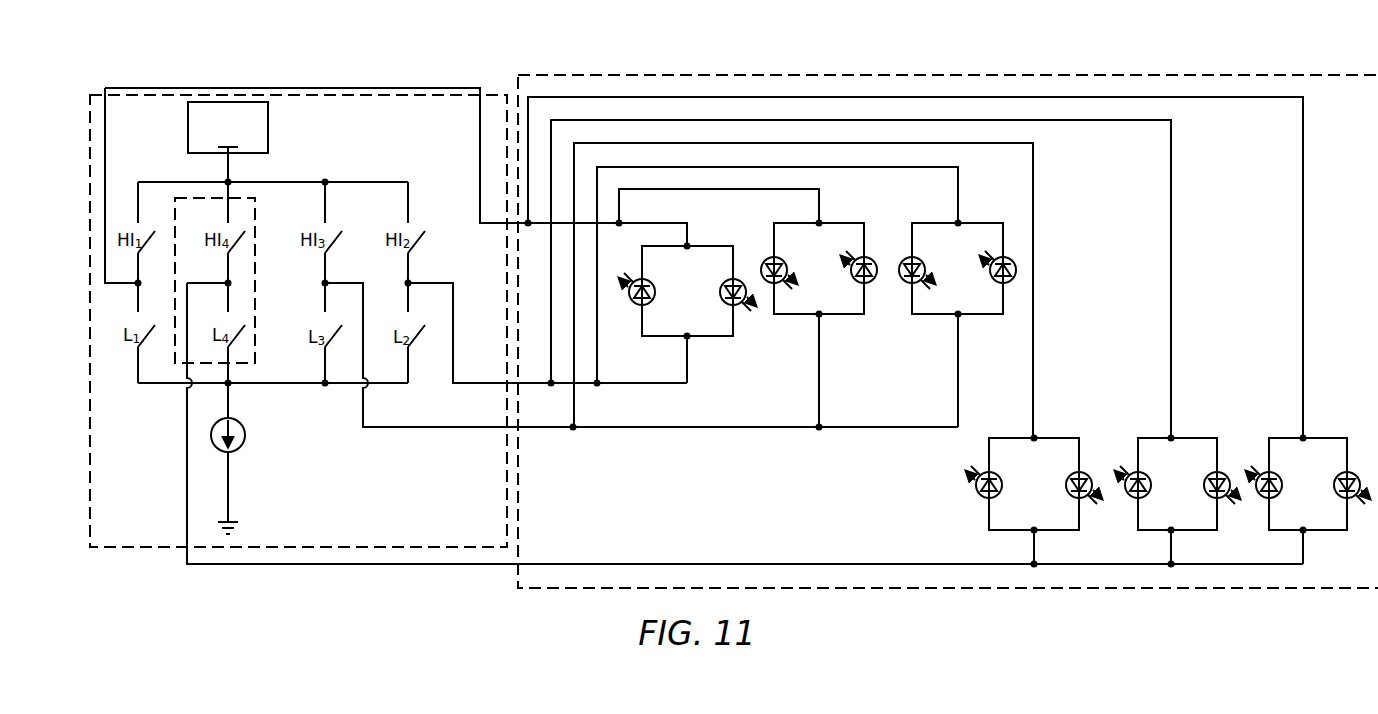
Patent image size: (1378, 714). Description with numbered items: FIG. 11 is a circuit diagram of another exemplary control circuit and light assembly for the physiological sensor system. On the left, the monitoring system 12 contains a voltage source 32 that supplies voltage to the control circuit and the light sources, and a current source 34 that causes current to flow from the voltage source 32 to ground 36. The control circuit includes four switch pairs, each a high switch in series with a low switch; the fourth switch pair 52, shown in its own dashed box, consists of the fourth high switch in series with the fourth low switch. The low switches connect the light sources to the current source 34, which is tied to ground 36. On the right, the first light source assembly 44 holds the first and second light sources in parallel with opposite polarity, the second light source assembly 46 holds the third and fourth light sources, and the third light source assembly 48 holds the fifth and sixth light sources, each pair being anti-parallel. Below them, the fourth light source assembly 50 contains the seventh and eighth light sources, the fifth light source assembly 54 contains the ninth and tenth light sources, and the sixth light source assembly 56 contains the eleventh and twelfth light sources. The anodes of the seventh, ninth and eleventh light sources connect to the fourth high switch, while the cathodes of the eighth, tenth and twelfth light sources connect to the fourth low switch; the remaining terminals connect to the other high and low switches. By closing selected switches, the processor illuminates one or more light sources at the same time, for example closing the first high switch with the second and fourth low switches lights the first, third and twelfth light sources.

The monitoring system 12 is at (1332, 57).
The voltage source 32 is at (268, 127).
The current source 34 is at (245, 437).
The ground 36 is at (240, 528).
The first light source assembly 44 is at (722, 235).
The second light source assembly 46 is at (850, 214).
The third light source assembly 48 is at (987, 213).
The fourth light source assembly 50 is at (1069, 429).
The fourth switch pair 52 is at (255, 355).
The fifth light source assembly 54 is at (1209, 429).
The sixth light source assembly 56 is at (1335, 429).